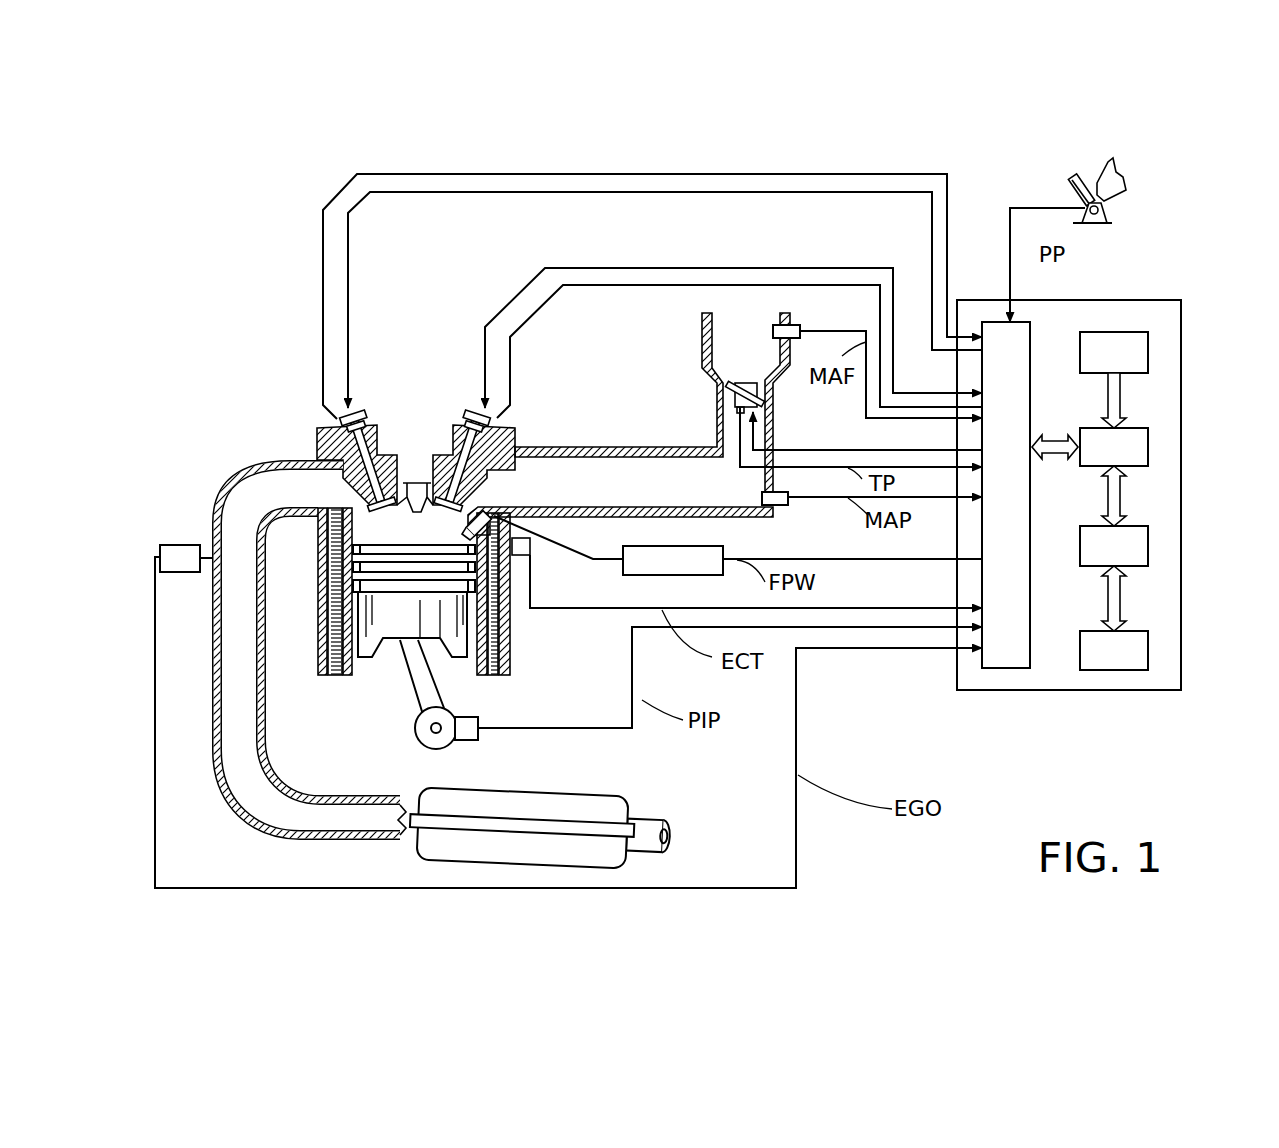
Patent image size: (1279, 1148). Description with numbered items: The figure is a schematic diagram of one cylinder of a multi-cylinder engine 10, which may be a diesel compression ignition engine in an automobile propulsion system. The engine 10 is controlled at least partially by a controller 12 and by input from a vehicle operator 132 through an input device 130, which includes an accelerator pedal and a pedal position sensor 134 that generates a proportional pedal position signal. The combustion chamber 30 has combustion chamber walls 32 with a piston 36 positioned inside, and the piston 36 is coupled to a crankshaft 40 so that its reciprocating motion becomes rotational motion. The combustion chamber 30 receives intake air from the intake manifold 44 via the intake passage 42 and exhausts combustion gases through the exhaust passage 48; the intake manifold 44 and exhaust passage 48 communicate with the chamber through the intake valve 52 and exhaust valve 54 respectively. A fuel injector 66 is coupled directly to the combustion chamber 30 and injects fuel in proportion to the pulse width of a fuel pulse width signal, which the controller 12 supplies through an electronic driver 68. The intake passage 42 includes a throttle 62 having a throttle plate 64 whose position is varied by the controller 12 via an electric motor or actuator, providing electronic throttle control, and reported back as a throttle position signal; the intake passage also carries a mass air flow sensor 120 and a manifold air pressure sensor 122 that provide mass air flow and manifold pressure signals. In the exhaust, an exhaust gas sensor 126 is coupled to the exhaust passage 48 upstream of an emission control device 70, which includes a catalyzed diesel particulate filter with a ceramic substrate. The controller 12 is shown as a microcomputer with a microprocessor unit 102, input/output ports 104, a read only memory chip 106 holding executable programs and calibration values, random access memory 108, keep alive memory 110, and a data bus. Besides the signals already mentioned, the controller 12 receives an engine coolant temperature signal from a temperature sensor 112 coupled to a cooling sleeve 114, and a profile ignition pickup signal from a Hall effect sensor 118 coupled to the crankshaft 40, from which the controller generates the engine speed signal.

The engine 10 is at (252, 380).
The controller 12 is at (1172, 300).
The combustion chamber 30 is at (330, 615).
The combustion chamber walls 32 is at (360, 667).
The piston 36 is at (398, 627).
The crankshaft 40 is at (427, 750).
The intake passage 42 is at (733, 358).
The intake manifold 44 is at (668, 498).
The exhaust passage 48 is at (273, 501).
The intake valve 52 is at (457, 495).
The exhaust valve 54 is at (370, 505).
The throttle 62 is at (765, 392).
The throttle plate 64 is at (732, 390).
The fuel injector 66 is at (526, 553).
The electronic driver 68 is at (652, 576).
The emission control device 70 is at (587, 797).
The microprocessor unit 102 is at (1150, 452).
The input/output ports 104 is at (1035, 332).
The read only memory chip 106 is at (1150, 355).
The random access memory 108 is at (1150, 550).
The keep alive memory 110 is at (1150, 655).
The temperature sensor 112 is at (528, 556).
The cooling sleeve 114 is at (510, 630).
The Hall effect sensor 118 is at (470, 743).
The mass air flow sensor 120 is at (800, 325).
The manifold air pressure sensor 122 is at (788, 503).
The exhaust gas sensor 126 is at (160, 547).
The input device 130 is at (1075, 186).
The vehicle operator 132 is at (1120, 173).
The pedal position sensor 134 is at (1100, 208).